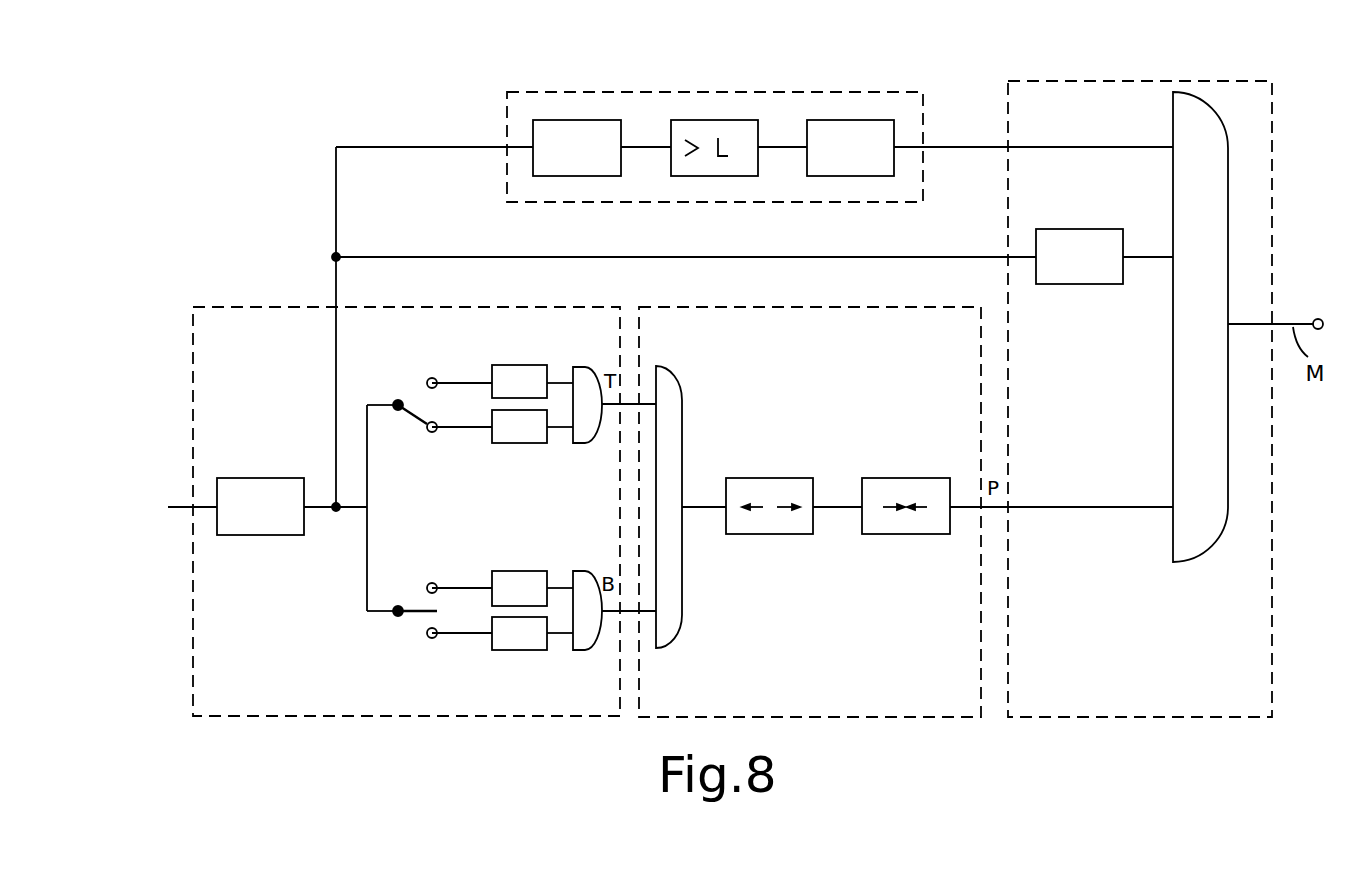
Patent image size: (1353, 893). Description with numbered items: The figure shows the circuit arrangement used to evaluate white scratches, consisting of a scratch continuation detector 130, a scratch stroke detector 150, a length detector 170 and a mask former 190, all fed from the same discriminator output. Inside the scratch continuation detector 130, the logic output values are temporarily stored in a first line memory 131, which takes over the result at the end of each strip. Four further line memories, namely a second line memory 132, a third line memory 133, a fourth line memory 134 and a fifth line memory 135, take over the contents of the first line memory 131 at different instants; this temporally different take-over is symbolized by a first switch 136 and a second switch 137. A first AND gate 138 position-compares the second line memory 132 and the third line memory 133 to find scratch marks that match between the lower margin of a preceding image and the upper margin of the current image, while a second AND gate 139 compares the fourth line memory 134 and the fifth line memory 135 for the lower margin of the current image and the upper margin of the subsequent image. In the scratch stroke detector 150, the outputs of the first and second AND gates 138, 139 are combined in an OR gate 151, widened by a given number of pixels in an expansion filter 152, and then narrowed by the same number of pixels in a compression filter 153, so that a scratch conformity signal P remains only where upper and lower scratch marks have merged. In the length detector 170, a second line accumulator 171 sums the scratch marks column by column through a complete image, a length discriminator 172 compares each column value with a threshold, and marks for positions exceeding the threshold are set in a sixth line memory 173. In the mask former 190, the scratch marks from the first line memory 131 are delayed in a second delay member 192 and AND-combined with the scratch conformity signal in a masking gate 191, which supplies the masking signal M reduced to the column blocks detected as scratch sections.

The scratch continuation detector 130 is at (439, 322).
The first line memory 131 is at (237, 490).
The second line memory 132 is at (518, 378).
The third line memory 133 is at (513, 430).
The fourth line memory 134 is at (510, 583).
The fifth line memory 135 is at (513, 639).
The first switch 136 is at (417, 410).
The second switch 137 is at (417, 608).
The first AND gate 138 is at (583, 383).
The second AND gate 139 is at (583, 580).
The scratch stroke detector 150 is at (858, 317).
The OR gate 151 is at (667, 387).
The expansion filter 152 is at (753, 490).
The compression filter 153 is at (896, 490).
The length detector 170 is at (923, 127).
The second line accumulator 171 is at (559, 130).
The length discriminator 172 is at (707, 130).
The sixth line memory 173 is at (847, 130).
The mask former 190 is at (1255, 166).
The masking gate 191 is at (1187, 335).
The second delay member 192 is at (1053, 242).